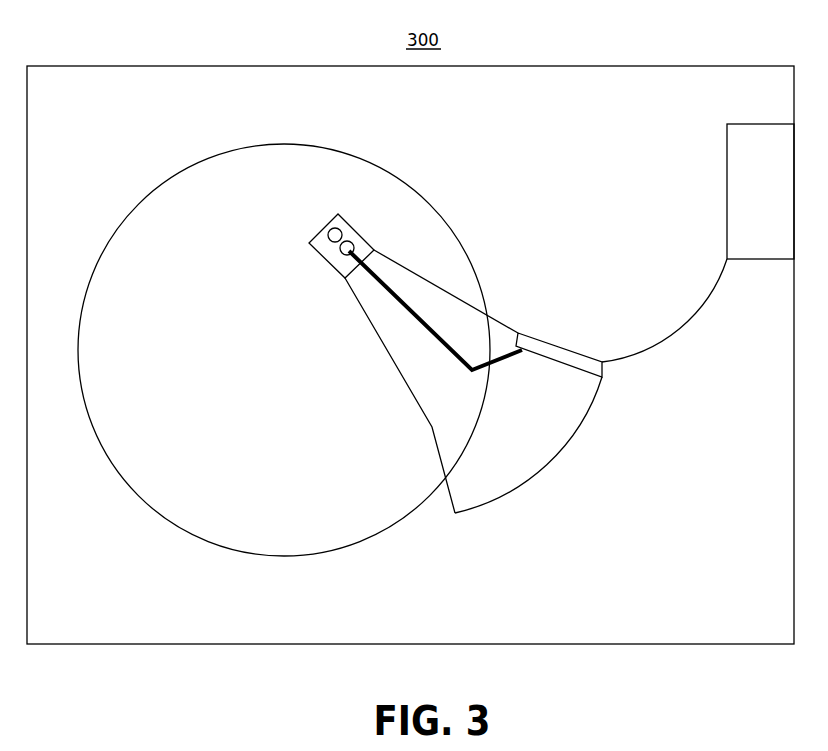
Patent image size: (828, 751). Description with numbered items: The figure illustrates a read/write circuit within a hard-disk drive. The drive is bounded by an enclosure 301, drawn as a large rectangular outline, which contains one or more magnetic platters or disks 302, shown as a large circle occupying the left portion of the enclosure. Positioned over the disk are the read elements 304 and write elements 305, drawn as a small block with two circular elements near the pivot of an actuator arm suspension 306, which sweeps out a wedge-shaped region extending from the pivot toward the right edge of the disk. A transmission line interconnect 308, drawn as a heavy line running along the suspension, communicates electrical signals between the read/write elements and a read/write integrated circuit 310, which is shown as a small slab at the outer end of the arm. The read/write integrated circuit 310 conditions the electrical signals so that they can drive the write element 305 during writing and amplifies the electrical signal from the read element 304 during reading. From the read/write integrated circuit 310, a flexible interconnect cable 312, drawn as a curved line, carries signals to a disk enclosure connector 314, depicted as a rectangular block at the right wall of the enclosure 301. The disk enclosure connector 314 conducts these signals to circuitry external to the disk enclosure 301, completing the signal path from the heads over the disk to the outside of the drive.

The enclosure 301 is at (693, 65).
The magnetic platters or disks 302 is at (412, 190).
The read elements 304 is at (328, 239).
The write elements 305 is at (352, 242).
The actuator arm suspension 306 is at (537, 473).
The transmission line interconnect 308 is at (427, 333).
The read/write integrated circuit 310 is at (552, 342).
The flexible interconnect cable 312 is at (668, 338).
The disk enclosure connector 314 is at (732, 200).